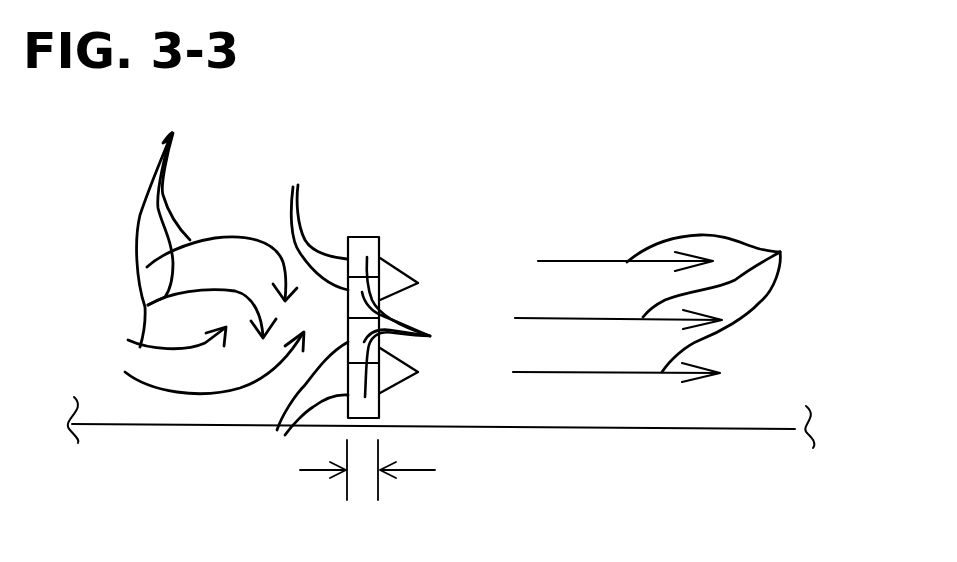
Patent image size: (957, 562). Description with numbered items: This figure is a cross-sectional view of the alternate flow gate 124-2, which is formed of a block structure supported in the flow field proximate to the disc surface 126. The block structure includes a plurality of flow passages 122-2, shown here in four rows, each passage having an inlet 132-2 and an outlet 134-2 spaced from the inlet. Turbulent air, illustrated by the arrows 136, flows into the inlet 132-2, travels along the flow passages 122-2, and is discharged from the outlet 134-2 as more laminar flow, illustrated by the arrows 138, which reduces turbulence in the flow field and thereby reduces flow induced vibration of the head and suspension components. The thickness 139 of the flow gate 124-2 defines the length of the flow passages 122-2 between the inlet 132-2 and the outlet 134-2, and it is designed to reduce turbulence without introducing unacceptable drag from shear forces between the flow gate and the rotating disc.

The arrows illustrating turbulent flow 136 is at (170, 223).
The inlet 132-2 is at (273, 440).
The flow gate 124-2 is at (363, 238).
The outlet 134-2 is at (433, 327).
The flow passages 122-2 is at (427, 327).
The arrows illustrating laminar flow 138 is at (661, 297).
The disc surface 126 is at (206, 426).
The thickness 139 is at (392, 470).